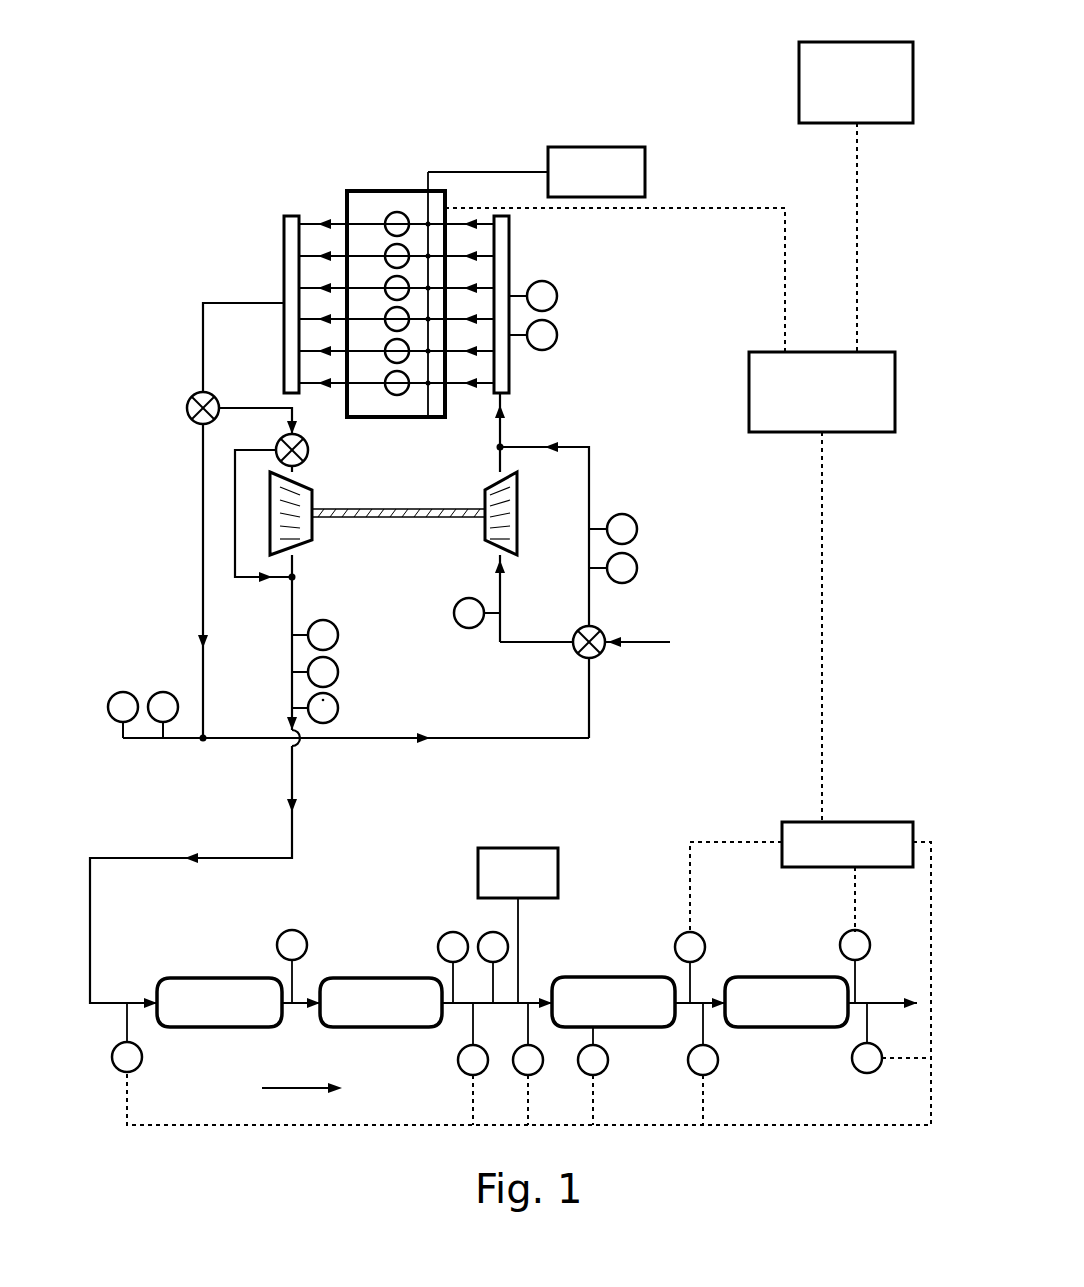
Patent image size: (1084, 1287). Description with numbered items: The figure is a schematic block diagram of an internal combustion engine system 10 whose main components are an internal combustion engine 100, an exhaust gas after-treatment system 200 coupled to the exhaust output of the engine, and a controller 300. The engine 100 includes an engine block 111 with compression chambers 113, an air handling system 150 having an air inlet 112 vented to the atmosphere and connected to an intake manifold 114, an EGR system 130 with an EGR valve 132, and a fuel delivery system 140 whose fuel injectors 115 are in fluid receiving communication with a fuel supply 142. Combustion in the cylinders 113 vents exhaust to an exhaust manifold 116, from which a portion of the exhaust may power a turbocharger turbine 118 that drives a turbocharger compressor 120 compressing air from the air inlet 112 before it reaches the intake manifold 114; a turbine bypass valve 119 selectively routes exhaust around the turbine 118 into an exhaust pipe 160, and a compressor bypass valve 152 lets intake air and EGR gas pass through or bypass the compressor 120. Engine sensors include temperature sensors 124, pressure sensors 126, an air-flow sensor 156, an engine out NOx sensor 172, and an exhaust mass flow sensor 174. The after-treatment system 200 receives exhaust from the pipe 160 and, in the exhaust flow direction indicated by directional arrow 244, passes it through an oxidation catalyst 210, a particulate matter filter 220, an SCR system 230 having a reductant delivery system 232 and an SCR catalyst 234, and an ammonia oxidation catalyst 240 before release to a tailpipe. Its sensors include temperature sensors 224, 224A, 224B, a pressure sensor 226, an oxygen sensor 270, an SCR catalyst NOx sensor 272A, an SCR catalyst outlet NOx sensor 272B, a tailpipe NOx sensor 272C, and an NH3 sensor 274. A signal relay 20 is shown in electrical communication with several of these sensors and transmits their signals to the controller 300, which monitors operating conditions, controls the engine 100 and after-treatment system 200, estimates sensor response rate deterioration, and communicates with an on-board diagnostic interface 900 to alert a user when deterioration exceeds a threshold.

The internal combustion engine system 10 is at (160, 78).
The internal combustion engine 100 is at (350, 95).
The engine block 111 is at (358, 189).
The compression chambers 113 is at (403, 212).
The intake manifold 114 is at (512, 240).
The fuel injectors 115 is at (428, 386).
The exhaust manifold 116 is at (280, 243).
The turbocharger turbine 118 is at (315, 495).
The turbine bypass valve 119 is at (309, 450).
The turbocharger compressor 120 is at (483, 488).
The temperature sensor 124 is at (558, 296).
The pressure sensor 126 is at (558, 335).
The EGR system 130 is at (175, 305).
The EGR valve 132 is at (188, 395).
The fuel delivery system 140 is at (575, 125).
The fuel supply 142 is at (536, 172).
The air handling system 150 is at (555, 418).
The compressor bypass valve 152 is at (577, 652).
The air-flow sensor 156 is at (470, 630).
The exhaust pipe 160 is at (292, 600).
The engine out NOx sensor 172 is at (110, 1056).
The exhaust mass flow sensor 174 is at (339, 708).
The air inlet 112 is at (657, 645).
The exhaust gas after-treatment system 200 is at (712, 795).
The oxidation catalyst 210 is at (197, 978).
The particulate matter filter 220 is at (387, 978).
The temperature sensor 224 is at (302, 934).
The temperature sensor 224A is at (702, 936).
The temperature sensor 224B is at (866, 937).
The pressure sensor 226 is at (445, 933).
The SCR system 230 is at (585, 910).
The reductant delivery system 232 is at (518, 925).
The SCR catalyst 234 is at (622, 980).
The ammonia oxidation catalyst 240 is at (795, 980).
The directional arrow 244 is at (298, 1086).
The oxygen sensor 270 is at (458, 1058).
The SCR catalyst NOx sensor 272A is at (605, 1072).
The SCR catalyst outlet NOx sensor 272B is at (715, 1070).
The tailpipe NOx sensor 272C is at (852, 1056).
The NH3 sensor 274 is at (540, 1072).
The controller 300 is at (822, 392).
The on-board diagnostic interface 900 is at (856, 82).
The signal relay 20 is at (847, 844).